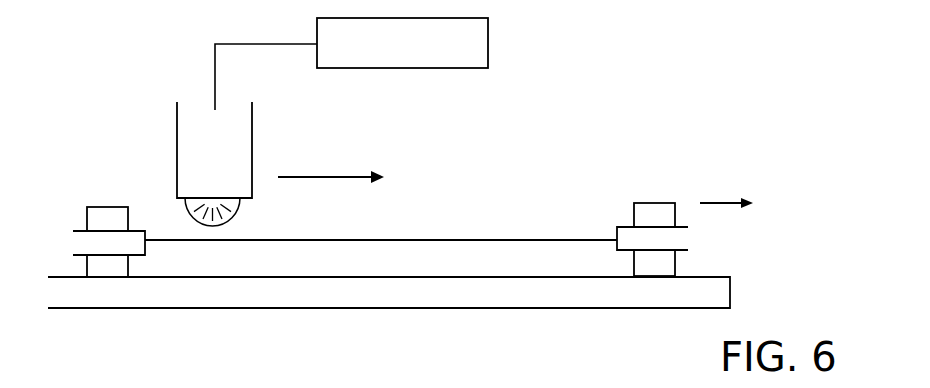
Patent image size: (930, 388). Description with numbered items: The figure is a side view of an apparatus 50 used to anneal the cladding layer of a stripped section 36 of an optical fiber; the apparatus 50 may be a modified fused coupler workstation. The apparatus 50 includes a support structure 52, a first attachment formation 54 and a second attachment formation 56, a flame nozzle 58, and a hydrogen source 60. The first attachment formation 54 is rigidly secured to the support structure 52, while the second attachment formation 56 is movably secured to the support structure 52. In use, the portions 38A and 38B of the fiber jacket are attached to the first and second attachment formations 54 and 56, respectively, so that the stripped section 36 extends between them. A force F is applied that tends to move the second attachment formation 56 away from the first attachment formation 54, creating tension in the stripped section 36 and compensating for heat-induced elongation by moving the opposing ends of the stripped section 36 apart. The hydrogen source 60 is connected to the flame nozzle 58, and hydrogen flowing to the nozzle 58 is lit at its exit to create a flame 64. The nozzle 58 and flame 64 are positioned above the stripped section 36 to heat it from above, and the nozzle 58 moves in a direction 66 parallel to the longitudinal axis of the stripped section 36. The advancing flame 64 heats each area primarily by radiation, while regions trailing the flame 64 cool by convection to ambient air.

The apparatus 50 is at (62, 75).
The hydrogen source 60 is at (488, 30).
The flame nozzle 58 is at (252, 128).
The flame 64 is at (233, 205).
The direction 66 is at (334, 167).
The first attachment formation 54 is at (107, 218).
The second attachment formation 56 is at (658, 213).
The stripped section 36 is at (500, 239).
The portion of the jacket 38A is at (75, 239).
The portion of the jacket 38B is at (688, 238).
The support structure 52 is at (446, 297).